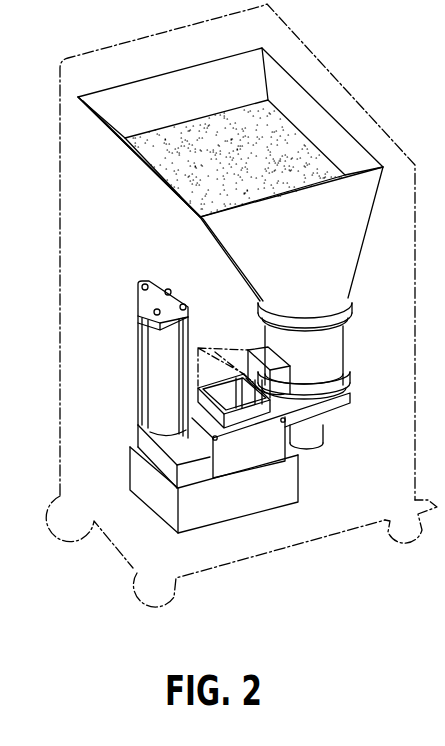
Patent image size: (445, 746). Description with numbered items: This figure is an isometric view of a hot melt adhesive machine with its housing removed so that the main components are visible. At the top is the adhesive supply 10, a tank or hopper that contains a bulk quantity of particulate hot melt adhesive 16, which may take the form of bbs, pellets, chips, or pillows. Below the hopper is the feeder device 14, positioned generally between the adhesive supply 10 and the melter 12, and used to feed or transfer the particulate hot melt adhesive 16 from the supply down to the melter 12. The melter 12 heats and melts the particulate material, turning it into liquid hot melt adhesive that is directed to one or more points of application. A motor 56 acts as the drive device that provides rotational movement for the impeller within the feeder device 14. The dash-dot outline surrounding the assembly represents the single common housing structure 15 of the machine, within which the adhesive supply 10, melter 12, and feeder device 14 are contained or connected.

The adhesive supply 10 is at (305, 53).
The melter 12 is at (124, 465).
The feeder device 14 is at (357, 325).
The housing structure 15 is at (347, 80).
The particulate hot melt adhesive 16 is at (251, 169).
The motor 56 is at (312, 446).